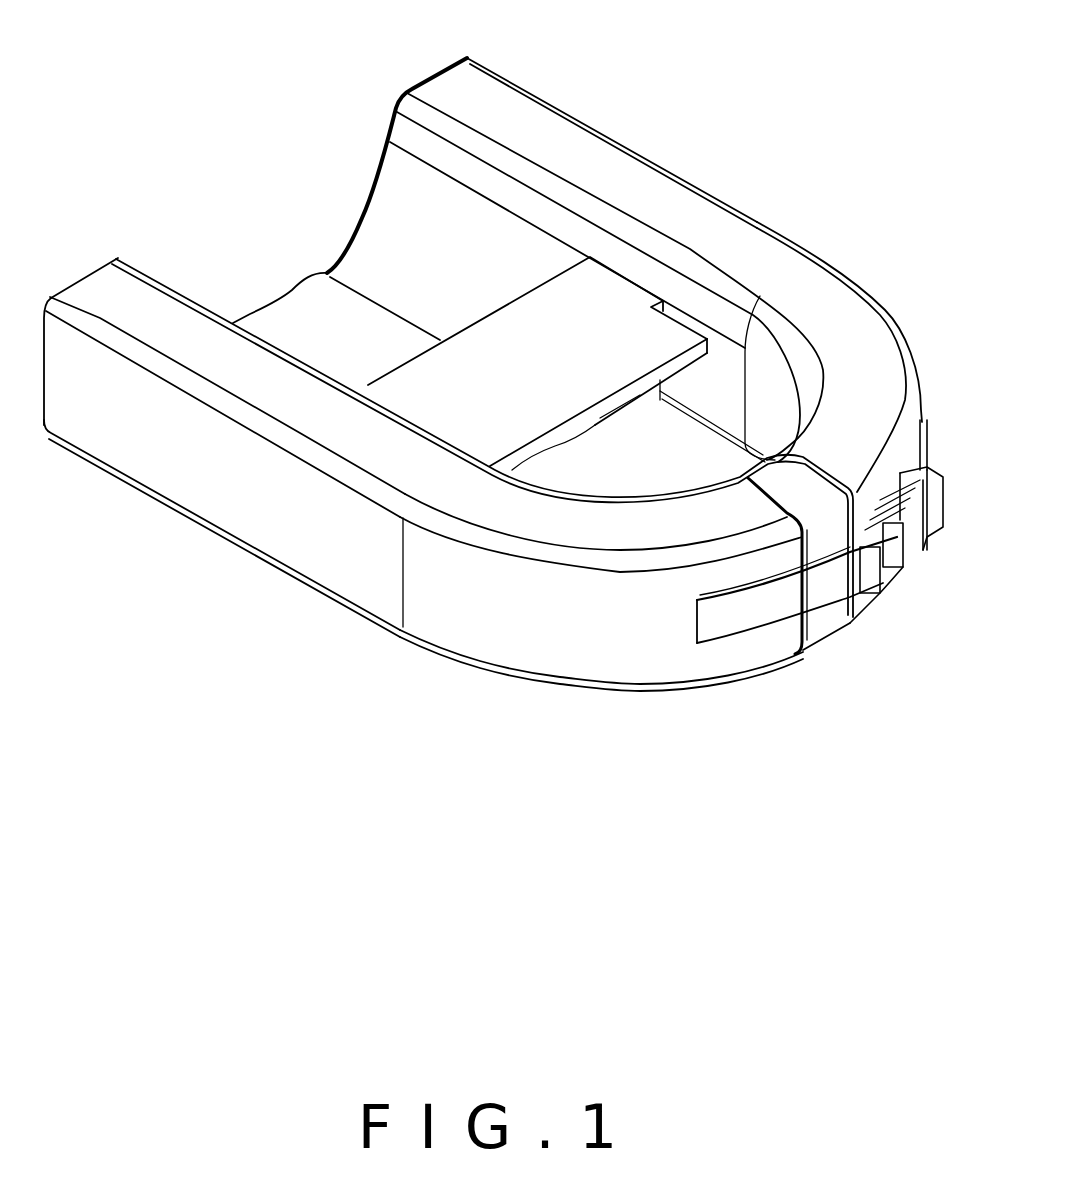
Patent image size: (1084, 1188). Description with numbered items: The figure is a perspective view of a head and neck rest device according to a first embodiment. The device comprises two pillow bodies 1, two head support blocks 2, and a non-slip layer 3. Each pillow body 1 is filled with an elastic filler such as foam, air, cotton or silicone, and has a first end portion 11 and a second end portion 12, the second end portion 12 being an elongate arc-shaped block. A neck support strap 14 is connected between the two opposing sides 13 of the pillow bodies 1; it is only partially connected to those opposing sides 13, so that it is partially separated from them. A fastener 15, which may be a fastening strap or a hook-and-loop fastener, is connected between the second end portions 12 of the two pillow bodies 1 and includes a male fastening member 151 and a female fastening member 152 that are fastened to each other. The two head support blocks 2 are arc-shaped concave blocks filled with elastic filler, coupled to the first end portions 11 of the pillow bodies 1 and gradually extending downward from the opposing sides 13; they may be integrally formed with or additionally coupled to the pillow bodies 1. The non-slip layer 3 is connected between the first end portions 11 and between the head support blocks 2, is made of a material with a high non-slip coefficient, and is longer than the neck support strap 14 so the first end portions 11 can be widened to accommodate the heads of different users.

The pillow body 1 is at (358, 485).
The head support block 2 is at (383, 204).
The non-slip layer 3 is at (292, 305).
The first end portion 11 is at (497, 90).
The second end portion 12 is at (632, 538).
The opposing side 13 is at (680, 312).
The neck support strap 14 is at (535, 405).
The fastener 15 is at (943, 723).
The male fastening member 151 is at (927, 480).
The female fastening member 152 is at (913, 537).